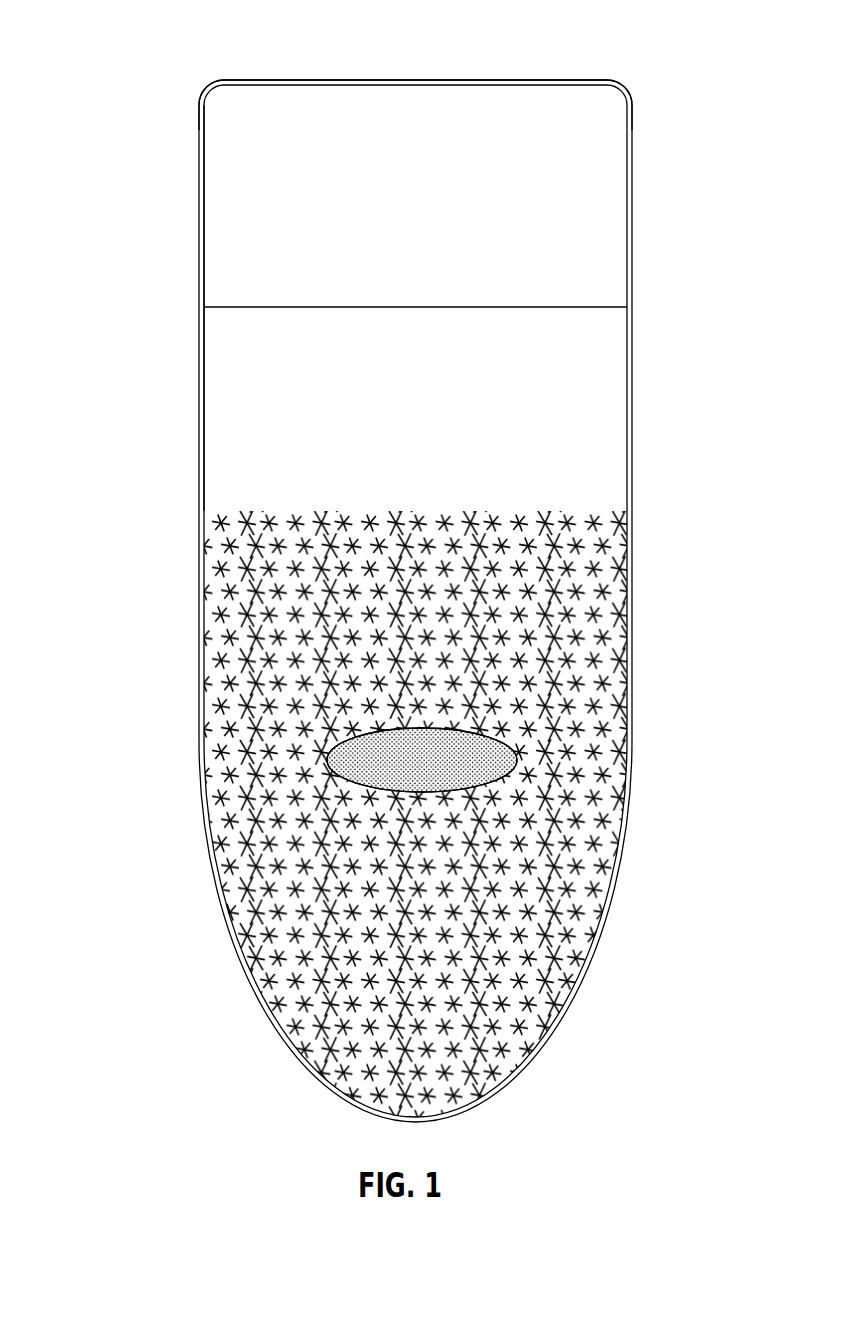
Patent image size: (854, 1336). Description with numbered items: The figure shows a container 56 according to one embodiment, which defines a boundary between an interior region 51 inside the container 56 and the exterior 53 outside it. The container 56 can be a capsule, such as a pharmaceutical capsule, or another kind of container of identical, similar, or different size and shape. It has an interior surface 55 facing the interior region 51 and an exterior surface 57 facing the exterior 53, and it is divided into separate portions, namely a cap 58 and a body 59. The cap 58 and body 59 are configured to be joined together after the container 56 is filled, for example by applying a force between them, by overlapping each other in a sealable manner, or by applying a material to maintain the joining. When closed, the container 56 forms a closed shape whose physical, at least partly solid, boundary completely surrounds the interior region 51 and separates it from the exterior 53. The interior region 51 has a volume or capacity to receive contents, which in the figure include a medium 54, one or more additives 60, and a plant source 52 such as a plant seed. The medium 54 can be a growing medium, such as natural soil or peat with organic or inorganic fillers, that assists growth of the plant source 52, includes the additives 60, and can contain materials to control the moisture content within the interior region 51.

The interior region 51 is at (442, 128).
The plant source 52 is at (502, 751).
The exterior 53 is at (126, 98).
The medium 54 is at (473, 812).
The interior surface 55 is at (204, 176).
The container 56 is at (614, 83).
The exterior surface 57 is at (201, 245).
The cap 58 is at (201, 275).
The body 59 is at (201, 407).
The additive 60 is at (553, 570).